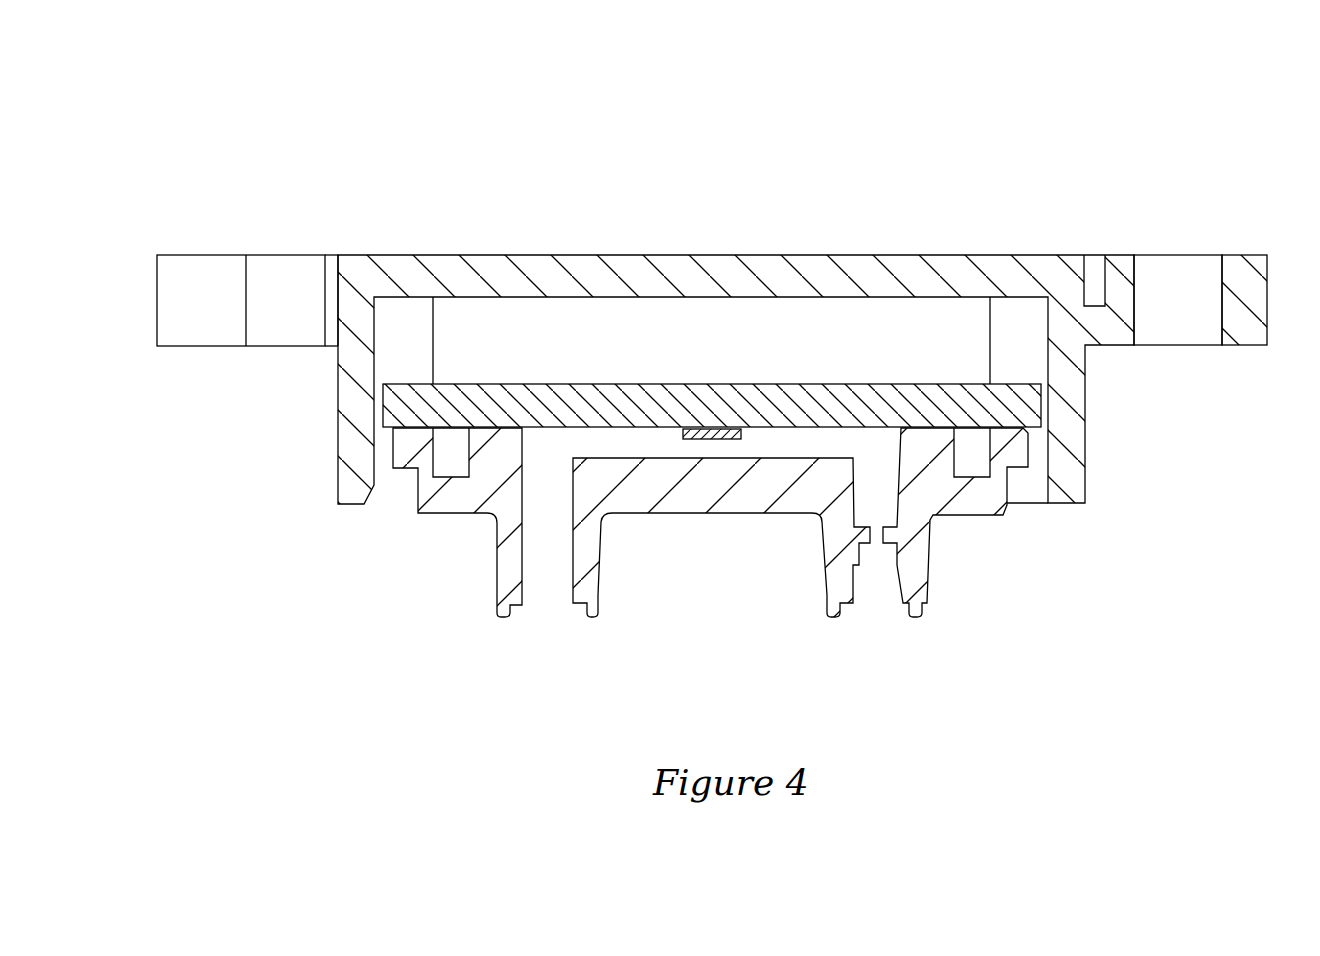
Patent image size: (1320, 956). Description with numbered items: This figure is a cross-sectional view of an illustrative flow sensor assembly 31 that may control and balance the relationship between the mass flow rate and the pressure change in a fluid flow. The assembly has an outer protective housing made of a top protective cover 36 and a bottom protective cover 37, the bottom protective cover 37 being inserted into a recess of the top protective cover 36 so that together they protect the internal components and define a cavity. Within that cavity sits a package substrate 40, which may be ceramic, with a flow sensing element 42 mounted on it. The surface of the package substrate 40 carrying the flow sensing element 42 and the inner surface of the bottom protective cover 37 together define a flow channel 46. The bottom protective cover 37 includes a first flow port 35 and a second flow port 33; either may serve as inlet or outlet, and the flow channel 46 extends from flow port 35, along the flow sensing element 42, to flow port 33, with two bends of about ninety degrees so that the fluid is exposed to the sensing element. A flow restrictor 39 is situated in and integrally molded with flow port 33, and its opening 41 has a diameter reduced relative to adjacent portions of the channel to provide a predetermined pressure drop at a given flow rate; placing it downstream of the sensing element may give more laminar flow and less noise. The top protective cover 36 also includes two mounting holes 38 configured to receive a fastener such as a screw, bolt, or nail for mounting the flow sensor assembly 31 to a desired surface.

The flow sensor assembly 31 is at (1084, 103).
The second flow port 33 is at (833, 583).
The first flow port 35 is at (505, 576).
The top protective cover 36 is at (1073, 426).
The bottom protective cover 37 is at (690, 503).
The mounting holes 38 is at (286, 267).
The flow restrictor 39 is at (887, 535).
The package substrate 40 is at (400, 408).
The opening 41 is at (877, 550).
The flow sensing element 42 is at (728, 439).
The flow channel 46 is at (603, 447).